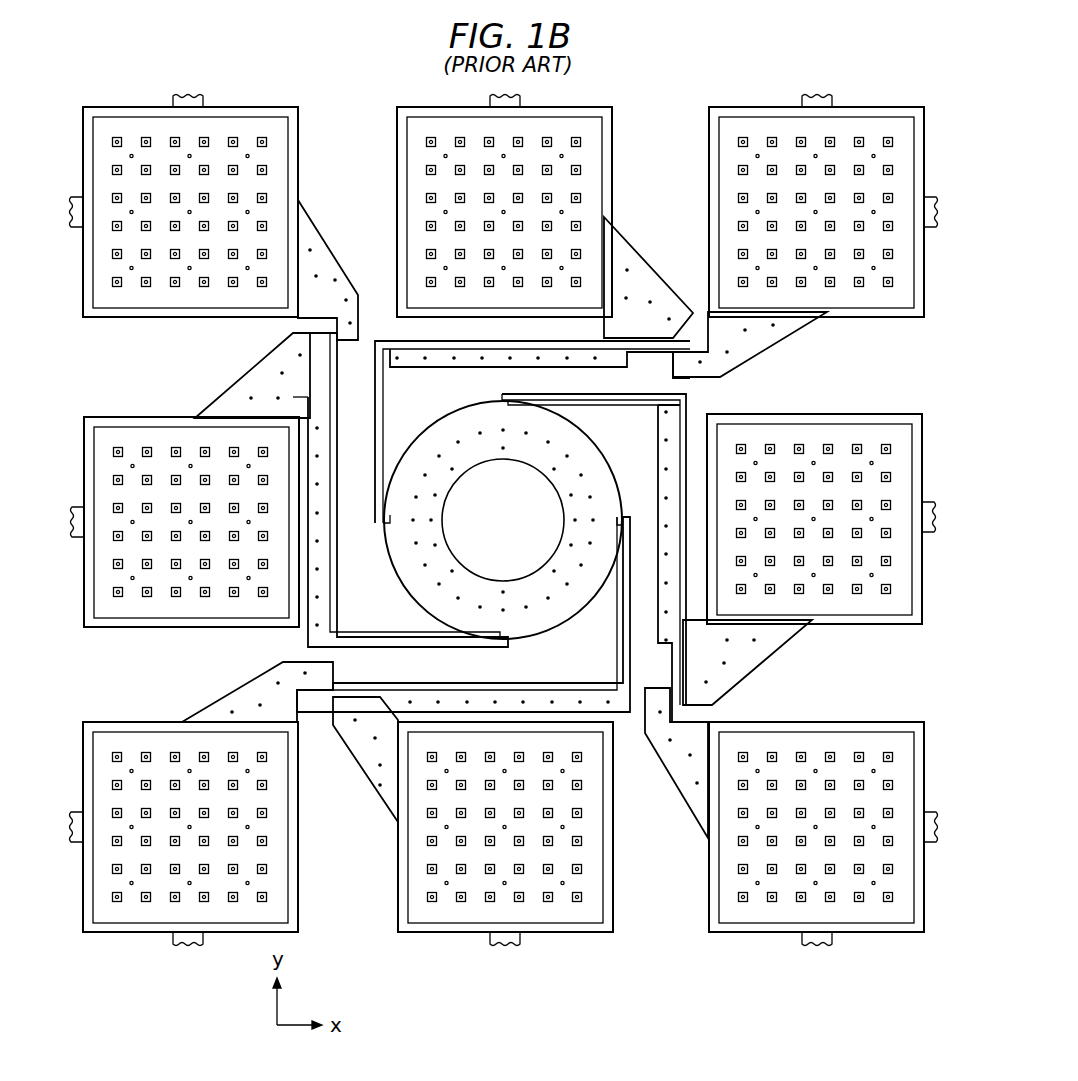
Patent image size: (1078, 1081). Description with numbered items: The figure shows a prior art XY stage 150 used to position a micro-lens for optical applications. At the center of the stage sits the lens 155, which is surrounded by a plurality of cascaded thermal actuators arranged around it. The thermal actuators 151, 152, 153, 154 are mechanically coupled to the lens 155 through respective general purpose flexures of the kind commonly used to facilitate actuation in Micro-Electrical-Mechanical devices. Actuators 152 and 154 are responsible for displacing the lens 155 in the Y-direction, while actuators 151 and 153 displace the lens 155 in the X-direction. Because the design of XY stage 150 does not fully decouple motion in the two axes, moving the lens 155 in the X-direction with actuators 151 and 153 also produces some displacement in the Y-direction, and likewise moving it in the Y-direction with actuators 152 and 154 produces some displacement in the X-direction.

The XY stage 150 is at (664, 96).
The thermal actuator 151 is at (684, 414).
The thermal actuator 152 is at (609, 714).
The thermal actuator 153 is at (308, 632).
The thermal actuator 154 is at (396, 338).
The lens 155 is at (483, 534).